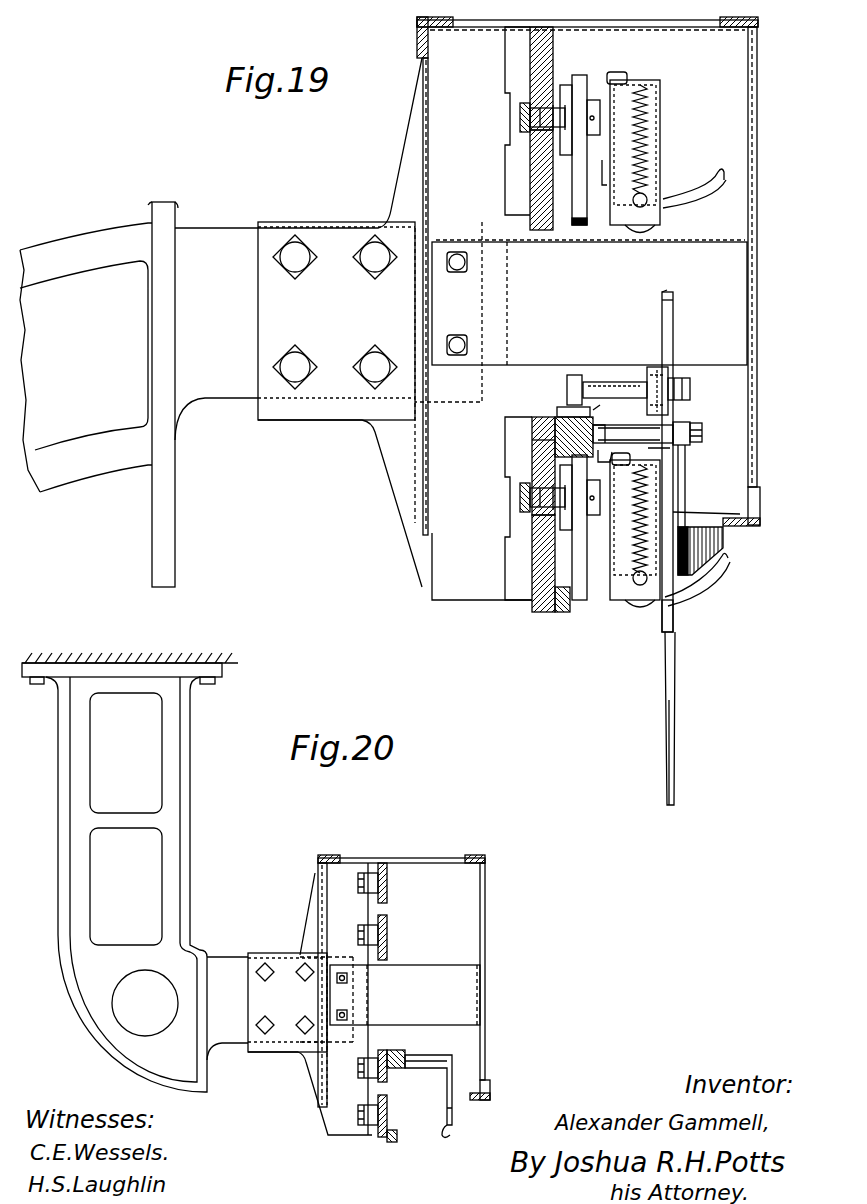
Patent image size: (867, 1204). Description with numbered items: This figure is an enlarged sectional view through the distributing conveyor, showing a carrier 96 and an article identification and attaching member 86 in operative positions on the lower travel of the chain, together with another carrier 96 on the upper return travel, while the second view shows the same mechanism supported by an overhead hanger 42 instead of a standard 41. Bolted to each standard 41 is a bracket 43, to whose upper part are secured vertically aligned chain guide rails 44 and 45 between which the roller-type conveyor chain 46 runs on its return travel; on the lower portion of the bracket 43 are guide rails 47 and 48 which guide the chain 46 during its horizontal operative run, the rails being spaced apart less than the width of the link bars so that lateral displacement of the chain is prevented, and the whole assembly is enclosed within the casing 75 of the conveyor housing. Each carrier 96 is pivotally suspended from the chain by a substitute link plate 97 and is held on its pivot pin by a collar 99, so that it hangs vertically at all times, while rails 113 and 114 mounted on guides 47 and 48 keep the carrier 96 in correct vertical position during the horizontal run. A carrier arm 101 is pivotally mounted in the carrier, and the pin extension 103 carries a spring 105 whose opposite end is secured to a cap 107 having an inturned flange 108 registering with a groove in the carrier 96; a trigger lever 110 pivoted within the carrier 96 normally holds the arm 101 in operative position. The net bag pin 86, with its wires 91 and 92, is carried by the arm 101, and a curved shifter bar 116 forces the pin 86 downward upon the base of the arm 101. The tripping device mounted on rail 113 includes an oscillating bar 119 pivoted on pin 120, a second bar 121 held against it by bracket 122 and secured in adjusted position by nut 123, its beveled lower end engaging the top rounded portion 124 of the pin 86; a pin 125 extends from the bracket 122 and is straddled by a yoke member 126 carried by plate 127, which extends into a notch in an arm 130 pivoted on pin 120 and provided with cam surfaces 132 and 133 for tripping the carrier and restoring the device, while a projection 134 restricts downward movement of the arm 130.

In FIG. 19, the standard 41 is at (86, 467).
In FIG. 20, the hanger 42 is at (185, 805).
In FIG. 19, the bracket 43 is at (450, 137).
In FIG. 20, the bracket 43 is at (295, 1047).
In FIG. 19, the chain guide rail 44 is at (553, 55).
In FIG. 20, the chain guide rail 44 is at (388, 875).
In FIG. 19, the chain guide rail 45 is at (545, 232).
In FIG. 20, the chain guide rail 45 is at (388, 930).
In FIG. 19, the conveyor chain 46 is at (520, 116).
In FIG. 19, the chain guide rail 47 is at (540, 430).
In FIG. 20, the chain guide rail 47 is at (385, 1050).
In FIG. 19, the chain guide rail 48 is at (545, 612).
In FIG. 20, the chain guide rail 48 is at (383, 1138).
In FIG. 19, the casing 75 is at (758, 172).
In FIG. 20, the casing 75 is at (487, 937).
In FIG. 19, the article attaching and identification member 86 is at (676, 622).
In FIG. 19, the wire 91 is at (675, 716).
In FIG. 19, the wire 92 is at (665, 722).
In FIG. 19, the carrier 96 is at (580, 226).
In FIG. 19, the substitute link plate 97 is at (566, 85).
In FIG. 19, the collar 99 is at (593, 100).
In FIG. 19, the carrier arm 101 is at (695, 200).
In FIG. 19, the pin extension 103 is at (637, 207).
In FIG. 19, the spring 105 is at (645, 125).
In FIG. 19, the cap 107 is at (650, 82).
In FIG. 19, the inturned flange 108 is at (600, 173).
In FIG. 19, the trigger lever 110 is at (620, 72).
In FIG. 19, the rail 113 is at (578, 417).
In FIG. 20, the rail 113 is at (420, 1050).
In FIG. 19, the rail 114 is at (565, 612).
In FIG. 20, the rail 114 is at (395, 1142).
In FIG. 19, the shifter bar 116 is at (725, 540).
In FIG. 20, the shifter bar 116 is at (459, 1131).
In FIG. 19, the oscillating bar 119 is at (670, 292).
In FIG. 19, the pin 120 is at (702, 433).
In FIG. 19, the second bar 121 is at (673, 337).
In FIG. 19, the bracket 122 is at (647, 378).
In FIG. 19, the nut 123 is at (690, 390).
In FIG. 19, the top rounded portion 124 is at (740, 514).
In FIG. 19, the pin 125 is at (615, 383).
In FIG. 19, the yoke member 126 is at (575, 375).
In FIG. 19, the plate 127 is at (540, 440).
In FIG. 19, the arm 130 is at (600, 463).
In FIG. 19, the cam surface 132 is at (650, 452).
In FIG. 19, the cam surface 133 is at (655, 445).
In FIG. 19, the projection 134 is at (600, 412).